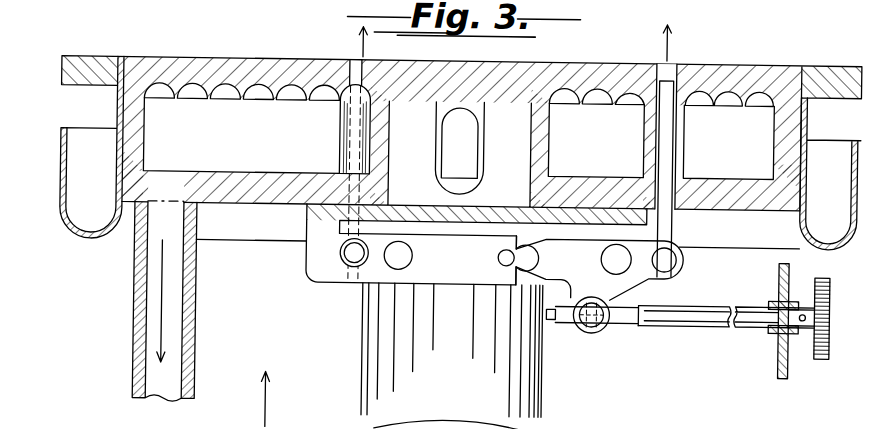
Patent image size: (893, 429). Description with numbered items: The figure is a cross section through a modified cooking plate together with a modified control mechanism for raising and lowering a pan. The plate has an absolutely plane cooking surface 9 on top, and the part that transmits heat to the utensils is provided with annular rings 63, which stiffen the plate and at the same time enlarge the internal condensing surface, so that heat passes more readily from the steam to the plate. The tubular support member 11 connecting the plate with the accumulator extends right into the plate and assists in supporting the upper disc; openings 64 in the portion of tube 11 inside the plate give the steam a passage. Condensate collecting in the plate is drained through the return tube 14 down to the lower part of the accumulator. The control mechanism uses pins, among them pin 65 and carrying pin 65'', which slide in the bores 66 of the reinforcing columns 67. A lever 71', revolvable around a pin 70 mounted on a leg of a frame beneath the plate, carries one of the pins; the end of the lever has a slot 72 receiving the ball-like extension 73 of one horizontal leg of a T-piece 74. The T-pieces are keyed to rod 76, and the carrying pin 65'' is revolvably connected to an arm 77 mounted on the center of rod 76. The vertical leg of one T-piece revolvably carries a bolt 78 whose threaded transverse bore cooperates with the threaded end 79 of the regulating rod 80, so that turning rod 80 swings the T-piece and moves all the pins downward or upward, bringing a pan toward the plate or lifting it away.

The cooking surface 9 is at (547, 60).
The tubular support member 11 is at (547, 391).
The return tube 14 is at (175, 316).
The annular rings 63 is at (613, 104).
The openings 64 is at (459, 148).
The pin 65 is at (335, 56).
The carrying pin 65'' is at (688, 151).
The bores 66 is at (346, 153).
The reinforcing columns 67 is at (340, 127).
The pin 70 is at (399, 260).
The lever 71' is at (452, 341).
The slots 72 is at (492, 265).
The ball-like extensions 73 is at (509, 266).
The T-pieces 74 is at (614, 303).
The rod 76 is at (620, 262).
The arm 77 is at (668, 270).
The bolt 78 is at (598, 326).
The threaded end 79 is at (634, 315).
The regulating rod 80 is at (705, 318).